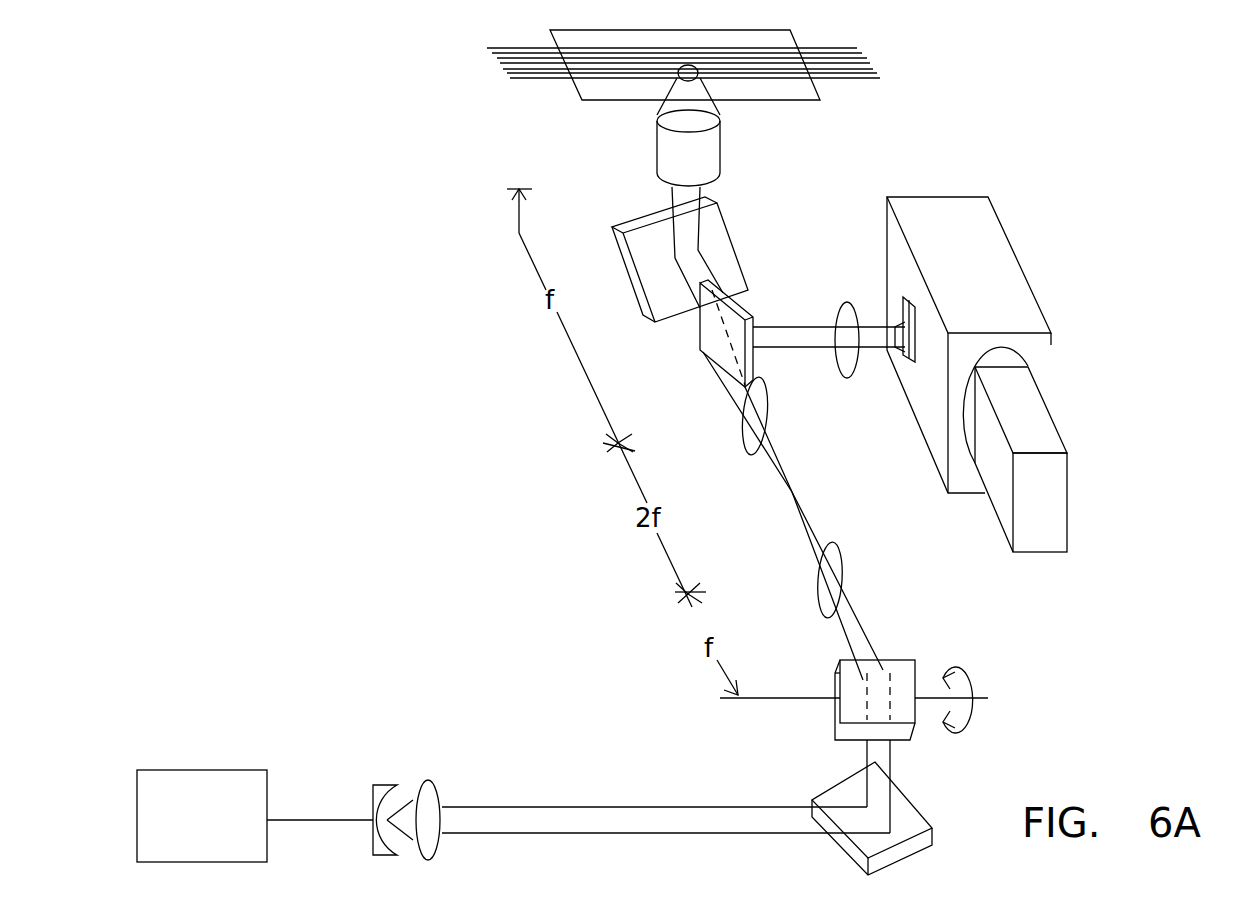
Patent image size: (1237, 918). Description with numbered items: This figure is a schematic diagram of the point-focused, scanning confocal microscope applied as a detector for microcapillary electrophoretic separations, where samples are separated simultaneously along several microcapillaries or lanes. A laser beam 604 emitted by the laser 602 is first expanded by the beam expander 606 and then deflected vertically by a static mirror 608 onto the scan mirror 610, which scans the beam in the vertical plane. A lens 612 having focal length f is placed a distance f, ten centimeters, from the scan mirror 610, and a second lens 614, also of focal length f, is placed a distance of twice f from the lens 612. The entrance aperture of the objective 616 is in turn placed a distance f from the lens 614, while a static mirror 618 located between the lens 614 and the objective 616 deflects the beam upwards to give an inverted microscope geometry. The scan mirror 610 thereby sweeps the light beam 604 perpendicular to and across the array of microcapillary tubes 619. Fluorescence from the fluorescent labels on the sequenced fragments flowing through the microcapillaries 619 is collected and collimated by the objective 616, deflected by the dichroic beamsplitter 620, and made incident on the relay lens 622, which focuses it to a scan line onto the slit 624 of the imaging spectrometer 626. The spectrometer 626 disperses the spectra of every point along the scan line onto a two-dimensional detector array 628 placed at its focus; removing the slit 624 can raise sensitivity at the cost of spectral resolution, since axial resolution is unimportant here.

The laser 602 is at (183, 770).
The laser beam 604 is at (603, 803).
The beam expander 606 is at (405, 753).
The static mirror 608 is at (913, 807).
The scan mirror 610 is at (843, 722).
The lens 612 is at (837, 543).
The lens 614 is at (767, 390).
The objective 616 is at (710, 150).
The static mirror 618 is at (650, 215).
The array of microcapillary tubes 619 is at (863, 48).
The dichroic beamsplitter 620 is at (707, 353).
The relay lens 622 is at (832, 317).
The slit 624 is at (888, 320).
The imaging spectrometer 626 is at (990, 257).
The two-dimensional detector array 628 is at (1043, 522).